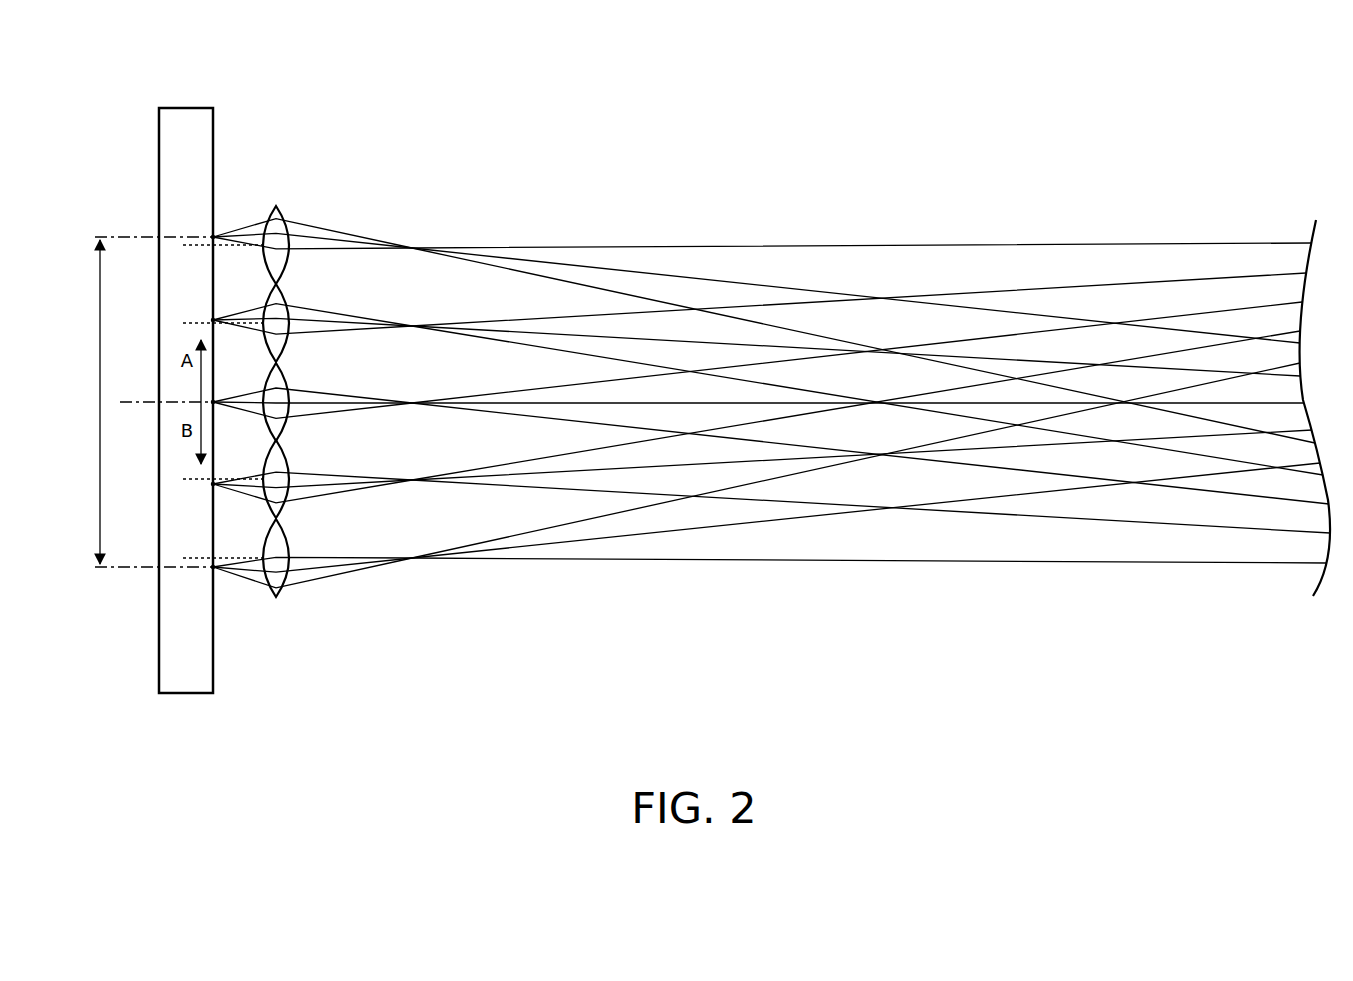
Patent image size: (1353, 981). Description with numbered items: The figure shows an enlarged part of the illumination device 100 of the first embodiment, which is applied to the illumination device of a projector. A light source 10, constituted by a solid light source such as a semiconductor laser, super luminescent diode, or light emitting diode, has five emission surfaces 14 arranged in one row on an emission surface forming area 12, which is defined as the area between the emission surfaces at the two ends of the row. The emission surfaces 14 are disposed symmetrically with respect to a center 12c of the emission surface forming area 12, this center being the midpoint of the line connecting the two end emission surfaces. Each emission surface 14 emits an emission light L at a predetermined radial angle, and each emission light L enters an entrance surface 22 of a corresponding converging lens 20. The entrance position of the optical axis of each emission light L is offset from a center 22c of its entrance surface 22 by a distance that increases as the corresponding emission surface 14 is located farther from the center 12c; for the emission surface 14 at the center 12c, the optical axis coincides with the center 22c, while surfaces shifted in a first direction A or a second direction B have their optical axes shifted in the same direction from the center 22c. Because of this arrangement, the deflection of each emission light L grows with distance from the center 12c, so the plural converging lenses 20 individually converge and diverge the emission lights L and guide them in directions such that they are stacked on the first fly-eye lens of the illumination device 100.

The light source 10 is at (189, 122).
The emission surfaces 14 is at (213, 237).
The converging lenses 20 is at (283, 357).
The entrance surface 22 is at (257, 213).
The center of the entrance surface 22c is at (235, 250).
The emission surface forming area 12 is at (137, 402).
The center of the emission surface forming area 12c is at (137, 405).
The illumination device 100 is at (1273, 107).
The emission light L is at (247, 620).